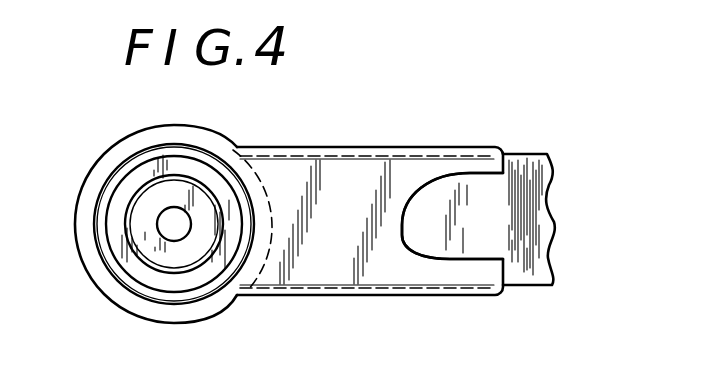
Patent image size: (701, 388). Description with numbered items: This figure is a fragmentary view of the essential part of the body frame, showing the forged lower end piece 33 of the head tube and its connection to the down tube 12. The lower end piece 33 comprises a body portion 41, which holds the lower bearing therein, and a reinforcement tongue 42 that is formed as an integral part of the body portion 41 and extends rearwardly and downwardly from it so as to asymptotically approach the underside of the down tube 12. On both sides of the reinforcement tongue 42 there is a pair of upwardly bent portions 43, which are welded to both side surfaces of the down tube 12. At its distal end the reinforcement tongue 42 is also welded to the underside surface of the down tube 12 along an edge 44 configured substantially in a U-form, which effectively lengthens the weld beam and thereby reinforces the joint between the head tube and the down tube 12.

The down tube 12 is at (533, 286).
The lower end piece 33 is at (180, 324).
The body portion 41 is at (95, 282).
The reinforcement tongue 42 is at (342, 273).
The upwardly bent portions 43 is at (347, 150).
The edge 44 is at (465, 257).